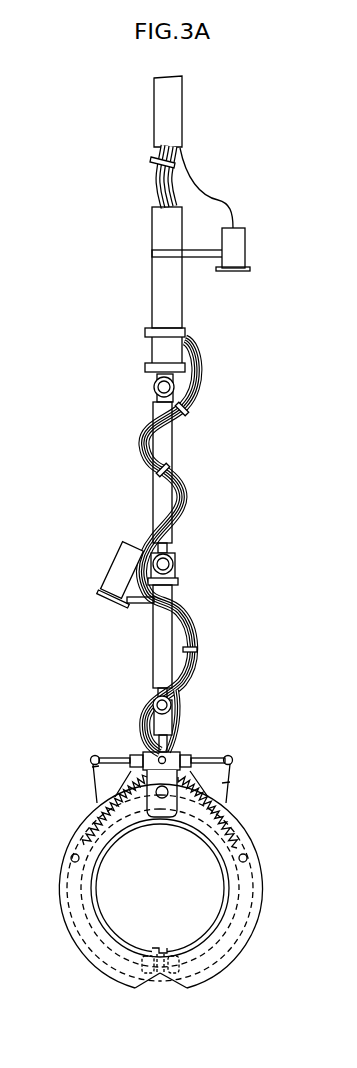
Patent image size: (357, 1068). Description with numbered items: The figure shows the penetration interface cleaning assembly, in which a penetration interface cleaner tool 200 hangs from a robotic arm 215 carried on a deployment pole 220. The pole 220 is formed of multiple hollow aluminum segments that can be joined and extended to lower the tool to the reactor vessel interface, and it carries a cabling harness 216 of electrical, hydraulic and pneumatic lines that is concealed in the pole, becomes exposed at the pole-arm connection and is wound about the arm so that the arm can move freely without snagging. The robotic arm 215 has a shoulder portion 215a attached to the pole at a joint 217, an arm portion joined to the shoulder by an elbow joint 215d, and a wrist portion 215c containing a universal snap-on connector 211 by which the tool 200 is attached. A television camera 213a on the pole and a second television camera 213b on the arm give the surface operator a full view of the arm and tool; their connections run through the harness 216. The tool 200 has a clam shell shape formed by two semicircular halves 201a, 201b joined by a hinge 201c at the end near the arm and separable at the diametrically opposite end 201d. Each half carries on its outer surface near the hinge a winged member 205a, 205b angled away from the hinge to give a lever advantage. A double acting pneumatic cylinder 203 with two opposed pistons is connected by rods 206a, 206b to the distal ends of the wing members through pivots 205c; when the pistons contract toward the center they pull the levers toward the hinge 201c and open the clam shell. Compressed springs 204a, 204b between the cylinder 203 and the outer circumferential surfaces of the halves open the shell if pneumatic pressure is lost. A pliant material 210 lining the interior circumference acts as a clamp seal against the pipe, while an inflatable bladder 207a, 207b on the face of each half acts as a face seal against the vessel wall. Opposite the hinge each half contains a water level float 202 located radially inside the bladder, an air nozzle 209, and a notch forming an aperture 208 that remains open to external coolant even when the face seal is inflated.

The deployment pole 220 is at (174, 108).
The cabling harness 216 is at (161, 188).
The television camera 213a is at (238, 251).
The joint 217 is at (154, 387).
The shoulder portion 215a is at (166, 447).
The robotic arm 215 is at (110, 481).
The television camera 213b is at (118, 567).
The elbow joint 215d is at (177, 566).
The wrist portion 215c is at (173, 708).
The universal snap-on connector 211 is at (171, 750).
The double acting pneumatic cylinder 203 is at (141, 753).
The rod 206a is at (212, 756).
The rod 206b is at (108, 755).
The winged member 205a is at (220, 797).
The winged member 205b is at (97, 782).
The pivot 205c is at (92, 767).
The compressed spring 204a is at (225, 826).
The compressed spring 204b is at (100, 825).
The hinge 201c is at (162, 818).
The pliant material 210 is at (222, 882).
The penetration interface cleaner tool 200 is at (163, 900).
The semicircular half 201a is at (264, 912).
The semicircular half 201b is at (59, 906).
The separable end 201d is at (158, 947).
The inflatable bladder 207a is at (245, 940).
The inflatable bladder 207b is at (76, 942).
The water level float 202 is at (228, 970).
The aperture 208 is at (160, 984).
The air nozzle 209 is at (150, 985).